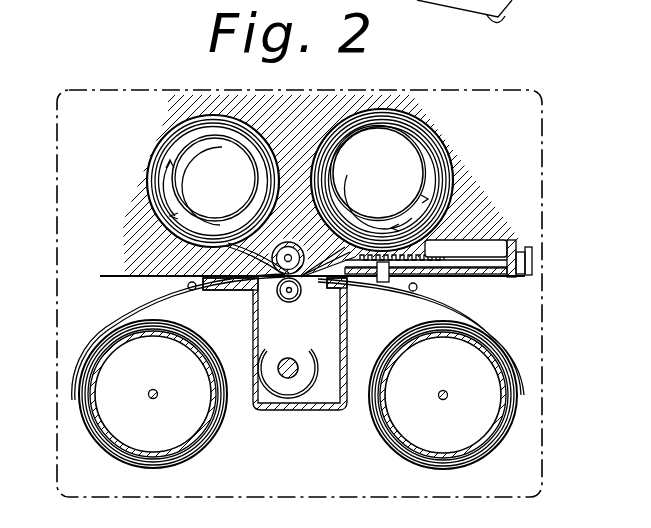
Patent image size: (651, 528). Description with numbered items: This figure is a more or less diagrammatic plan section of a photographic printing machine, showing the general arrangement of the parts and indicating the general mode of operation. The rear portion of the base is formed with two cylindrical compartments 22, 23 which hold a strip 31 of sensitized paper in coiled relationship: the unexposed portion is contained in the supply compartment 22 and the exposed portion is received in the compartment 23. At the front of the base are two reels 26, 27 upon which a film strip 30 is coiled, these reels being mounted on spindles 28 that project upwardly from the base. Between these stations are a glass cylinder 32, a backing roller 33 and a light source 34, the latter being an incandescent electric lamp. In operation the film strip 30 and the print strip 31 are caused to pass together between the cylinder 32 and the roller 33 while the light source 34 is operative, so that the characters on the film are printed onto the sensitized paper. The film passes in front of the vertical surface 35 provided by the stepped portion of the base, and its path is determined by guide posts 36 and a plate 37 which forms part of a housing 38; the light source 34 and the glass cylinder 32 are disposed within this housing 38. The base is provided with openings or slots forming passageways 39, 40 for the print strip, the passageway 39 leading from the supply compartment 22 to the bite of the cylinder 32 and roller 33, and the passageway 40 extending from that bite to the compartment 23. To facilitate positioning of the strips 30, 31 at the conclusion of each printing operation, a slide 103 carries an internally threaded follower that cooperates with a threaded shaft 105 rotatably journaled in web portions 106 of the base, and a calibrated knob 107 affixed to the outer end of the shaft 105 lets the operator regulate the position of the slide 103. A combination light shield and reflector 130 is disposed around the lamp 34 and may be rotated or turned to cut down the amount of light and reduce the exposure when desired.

The supply compartment 22 is at (380, 174).
The compartment 23 is at (224, 177).
The reel 26 is at (505, 382).
The reel 27 is at (215, 378).
The spindle 28 is at (152, 388).
The film strip 30 is at (483, 324).
The print strip 31 is at (254, 197).
The glass cylinder 32 is at (299, 297).
The backing roller 33 is at (291, 242).
The light source 34 is at (294, 358).
The vertical surface 35 is at (118, 280).
The guide post 36 is at (189, 290).
The plate 37 is at (232, 292).
The housing 38 is at (279, 411).
The passageway 39 is at (349, 262).
The passageway 40 is at (246, 252).
The slide 103 is at (384, 283).
The threaded shaft 105 is at (494, 262).
The web portion 106 is at (424, 253).
The calibrated knob 107 is at (533, 268).
The light shield and reflector 130 is at (305, 396).